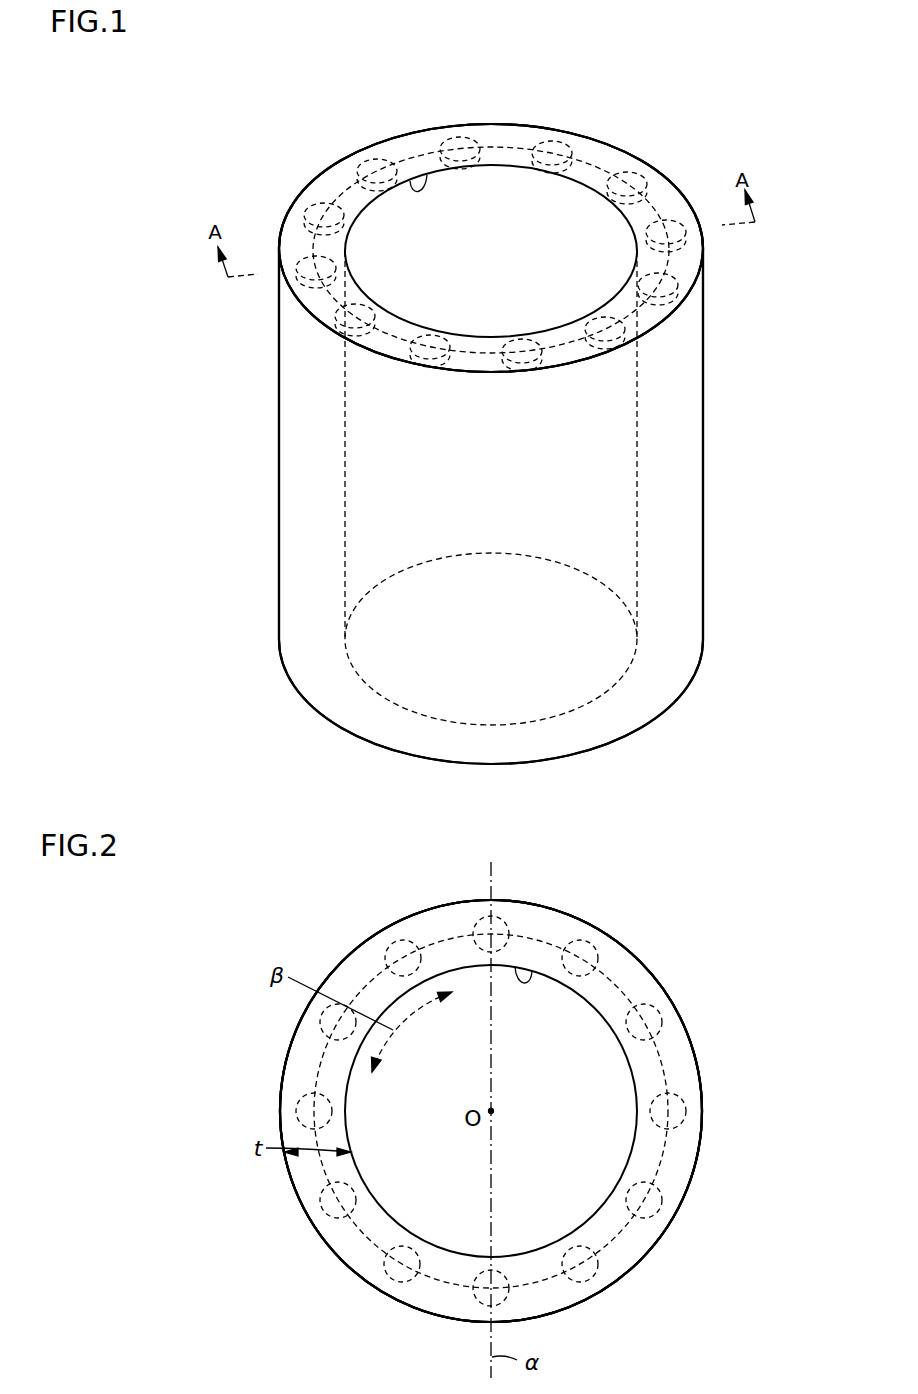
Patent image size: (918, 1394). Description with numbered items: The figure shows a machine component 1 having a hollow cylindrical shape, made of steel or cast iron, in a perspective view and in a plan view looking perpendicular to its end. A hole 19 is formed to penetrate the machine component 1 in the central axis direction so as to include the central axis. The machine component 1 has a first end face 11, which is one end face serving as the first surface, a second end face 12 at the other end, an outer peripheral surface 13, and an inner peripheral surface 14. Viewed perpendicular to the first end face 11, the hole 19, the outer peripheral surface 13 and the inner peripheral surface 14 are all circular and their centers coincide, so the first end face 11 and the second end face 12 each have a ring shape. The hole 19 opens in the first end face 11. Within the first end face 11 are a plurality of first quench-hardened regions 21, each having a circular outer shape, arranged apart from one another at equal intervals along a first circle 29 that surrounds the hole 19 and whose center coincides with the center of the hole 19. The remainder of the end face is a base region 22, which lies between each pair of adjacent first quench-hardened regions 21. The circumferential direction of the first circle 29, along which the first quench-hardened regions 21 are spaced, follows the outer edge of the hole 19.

In FIG. 1, the machine component 1 is at (583, 122).
In FIG. 2, the machine component 1 is at (623, 903).
In FIG. 1, the first end face 11 is at (323, 190).
In FIG. 2, the first end face 11 is at (458, 912).
In FIG. 1, the second end face 12 is at (640, 700).
In FIG. 1, the outer peripheral surface 13 is at (704, 455).
In FIG. 2, the outer peripheral surface 13 is at (703, 1071).
In FIG. 1, the inner peripheral surface 14 is at (418, 178).
In FIG. 2, the inner peripheral surface 14 is at (533, 970).
In FIG. 1, the hole 19 is at (491, 243).
In FIG. 2, the hole 19 is at (542, 1122).
In FIG. 1, the first quench-hardened regions 21 is at (522, 358).
In FIG. 2, the first quench-hardened regions 21 is at (393, 948).
In FIG. 1, the base region 22 is at (603, 160).
In FIG. 2, the base region 22 is at (357, 968).
In FIG. 1, the first circle 29 is at (512, 147).
In FIG. 2, the first circle 29 is at (620, 985).